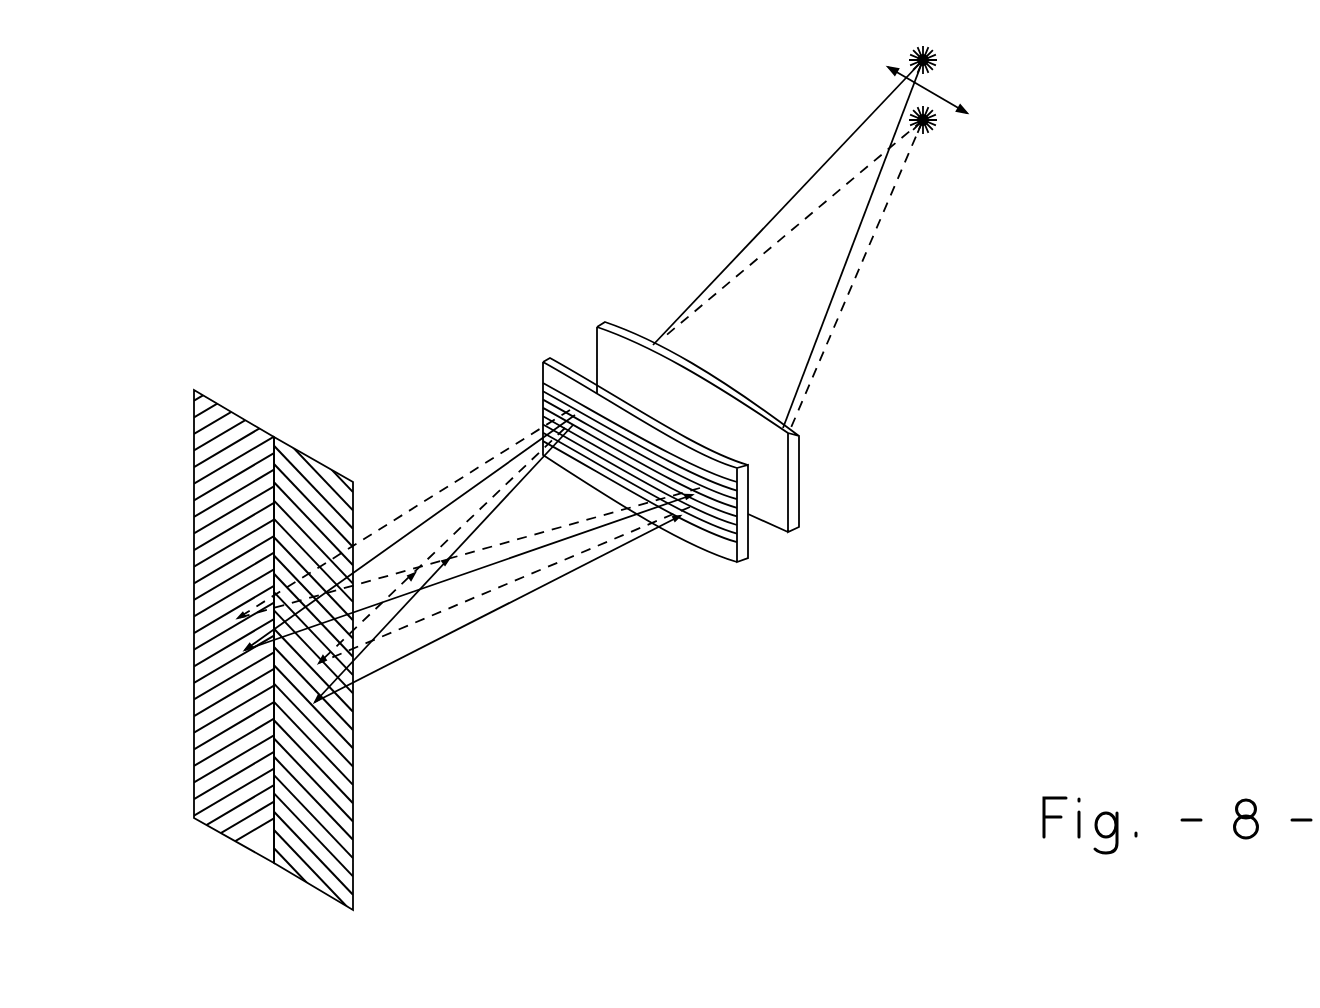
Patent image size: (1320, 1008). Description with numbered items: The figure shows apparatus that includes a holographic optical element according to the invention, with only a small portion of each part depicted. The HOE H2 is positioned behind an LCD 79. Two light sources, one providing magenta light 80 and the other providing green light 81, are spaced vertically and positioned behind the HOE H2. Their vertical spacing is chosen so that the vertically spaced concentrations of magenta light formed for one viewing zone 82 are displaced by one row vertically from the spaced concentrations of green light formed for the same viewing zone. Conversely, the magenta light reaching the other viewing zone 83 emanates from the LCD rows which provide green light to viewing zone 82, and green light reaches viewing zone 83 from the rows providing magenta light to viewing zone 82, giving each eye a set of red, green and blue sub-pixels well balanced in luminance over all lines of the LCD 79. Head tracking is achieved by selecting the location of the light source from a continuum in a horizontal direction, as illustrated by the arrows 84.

The LCD 79 is at (734, 564).
The magenta light source 80 is at (938, 62).
The green light source 81 is at (941, 128).
The viewing zone 82 is at (230, 440).
The other viewing zone 83 is at (313, 480).
The arrows 84 is at (888, 67).
The HOE H2 is at (795, 492).